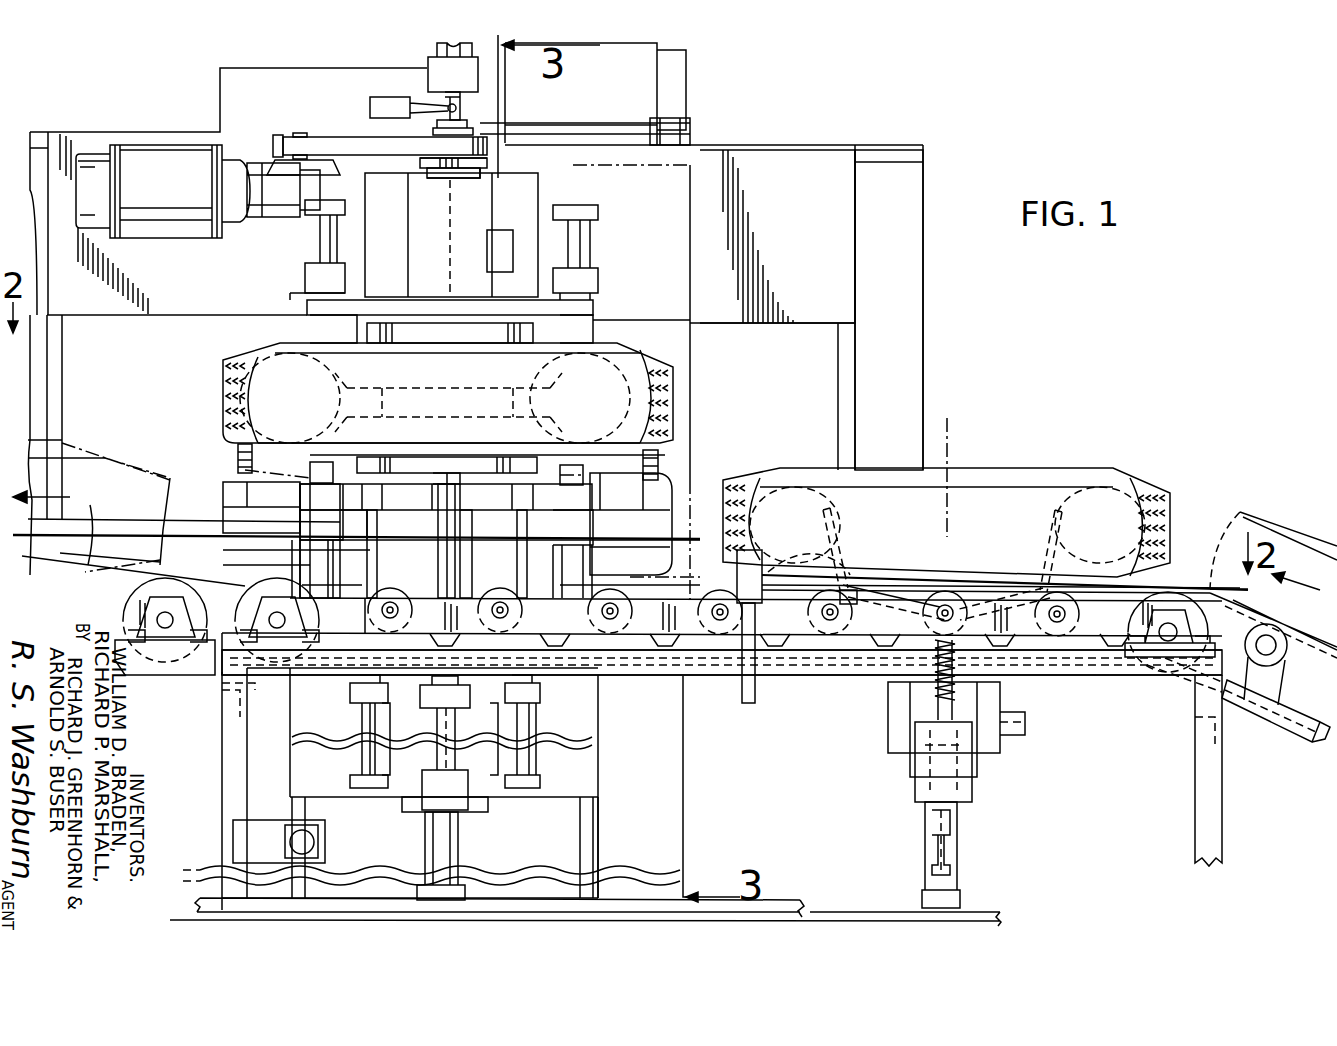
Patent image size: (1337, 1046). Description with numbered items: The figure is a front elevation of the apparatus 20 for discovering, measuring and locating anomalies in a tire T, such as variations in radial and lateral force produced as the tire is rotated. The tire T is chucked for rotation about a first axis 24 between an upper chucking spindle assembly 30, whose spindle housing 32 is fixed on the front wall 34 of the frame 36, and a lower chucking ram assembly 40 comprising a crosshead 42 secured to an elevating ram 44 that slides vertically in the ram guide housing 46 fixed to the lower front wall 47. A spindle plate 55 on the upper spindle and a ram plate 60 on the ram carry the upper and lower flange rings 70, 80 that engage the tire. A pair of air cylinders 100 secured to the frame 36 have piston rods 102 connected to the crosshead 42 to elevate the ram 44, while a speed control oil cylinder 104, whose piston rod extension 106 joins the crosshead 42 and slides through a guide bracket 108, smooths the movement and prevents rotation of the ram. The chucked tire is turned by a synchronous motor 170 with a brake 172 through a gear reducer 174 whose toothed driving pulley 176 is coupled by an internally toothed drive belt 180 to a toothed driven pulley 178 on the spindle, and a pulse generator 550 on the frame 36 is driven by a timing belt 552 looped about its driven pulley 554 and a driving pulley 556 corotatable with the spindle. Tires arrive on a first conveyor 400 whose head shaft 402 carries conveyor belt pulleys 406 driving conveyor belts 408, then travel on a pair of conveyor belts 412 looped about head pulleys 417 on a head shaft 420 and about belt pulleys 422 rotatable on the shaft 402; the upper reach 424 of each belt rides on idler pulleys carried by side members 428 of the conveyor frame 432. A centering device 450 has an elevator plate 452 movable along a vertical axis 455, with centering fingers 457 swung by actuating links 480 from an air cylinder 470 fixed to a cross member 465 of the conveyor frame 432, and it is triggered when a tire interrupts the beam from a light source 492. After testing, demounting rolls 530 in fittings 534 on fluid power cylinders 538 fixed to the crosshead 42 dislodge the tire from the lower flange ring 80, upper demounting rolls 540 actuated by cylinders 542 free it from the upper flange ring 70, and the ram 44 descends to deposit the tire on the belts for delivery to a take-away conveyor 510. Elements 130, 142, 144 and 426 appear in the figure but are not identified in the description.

The apparatus 20 is at (1082, 310).
The first axis 24 is at (455, 212).
The upper chucking spindle assembly 30 is at (600, 262).
The spindle housing 32 is at (440, 265).
The front wall 34 is at (794, 203).
The frame 36 is at (925, 365).
The lower chucking ram assembly 40 is at (500, 507).
The crosshead 42 is at (585, 505).
The elevating ram 44 is at (458, 547).
The ram guide housing 46 is at (485, 802).
The lower front wall 47 is at (585, 773).
The spindle plate 55 is at (503, 322).
The ram plate 60 is at (526, 470).
The upper flange ring 70 is at (547, 357).
The lower flange ring 80 is at (660, 416).
The tire T is at (678, 392).
The air cylinders 100 is at (360, 716).
The piston rods 102 is at (522, 556).
The speed control oil cylinder 104 is at (452, 850).
The piston rod extension 106 is at (467, 762).
The guide bracket 108 is at (427, 698).
The bearing 130 is at (460, 106).
The upper bracket 142 is at (437, 42).
The upper cylinder 144 is at (478, 76).
The synchronous motor 170 is at (178, 150).
The brake 172 is at (92, 154).
The gear reducer 174 is at (258, 165).
The toothed driving pulley 176 is at (300, 133).
The toothed driven pulley 178 is at (430, 138).
The drive belt 180 is at (318, 140).
The first conveyor 400 is at (1315, 744).
The head shaft 402 is at (1167, 642).
The conveyor belt pulleys 406 is at (1140, 625).
The conveyor belts 408 is at (1312, 665).
The conveyor belts 412 is at (795, 660).
The head pulleys 417 is at (258, 590).
The head shaft 420 is at (275, 618).
The belt pulleys 422 is at (1137, 655).
The upper reach 424 is at (680, 640).
The stop post 426 is at (742, 628).
The side members 428 is at (385, 620).
The conveyor frame 432 is at (232, 742).
The centering device 450 is at (1065, 470).
The elevator plate 452 is at (975, 598).
The vertical axis 455 is at (947, 433).
The fingers 457 is at (846, 522).
The cross member 465 is at (977, 765).
The air cylinder 470 is at (953, 842).
The actuating links 480 is at (882, 603).
The light source 492 is at (750, 563).
The take-away conveyor 510 is at (92, 521).
The demounting rolls 530 is at (240, 450).
The fittings 534 is at (310, 477).
The fluid power cylinders 538 is at (315, 555).
The upper demounting rolls 540 is at (310, 342).
The cylinders 542 is at (313, 240).
The pulse generator 550 is at (690, 70).
The timing belt 552 is at (597, 125).
The driven pulley 554 is at (690, 125).
The driving pulley 556 is at (470, 123).